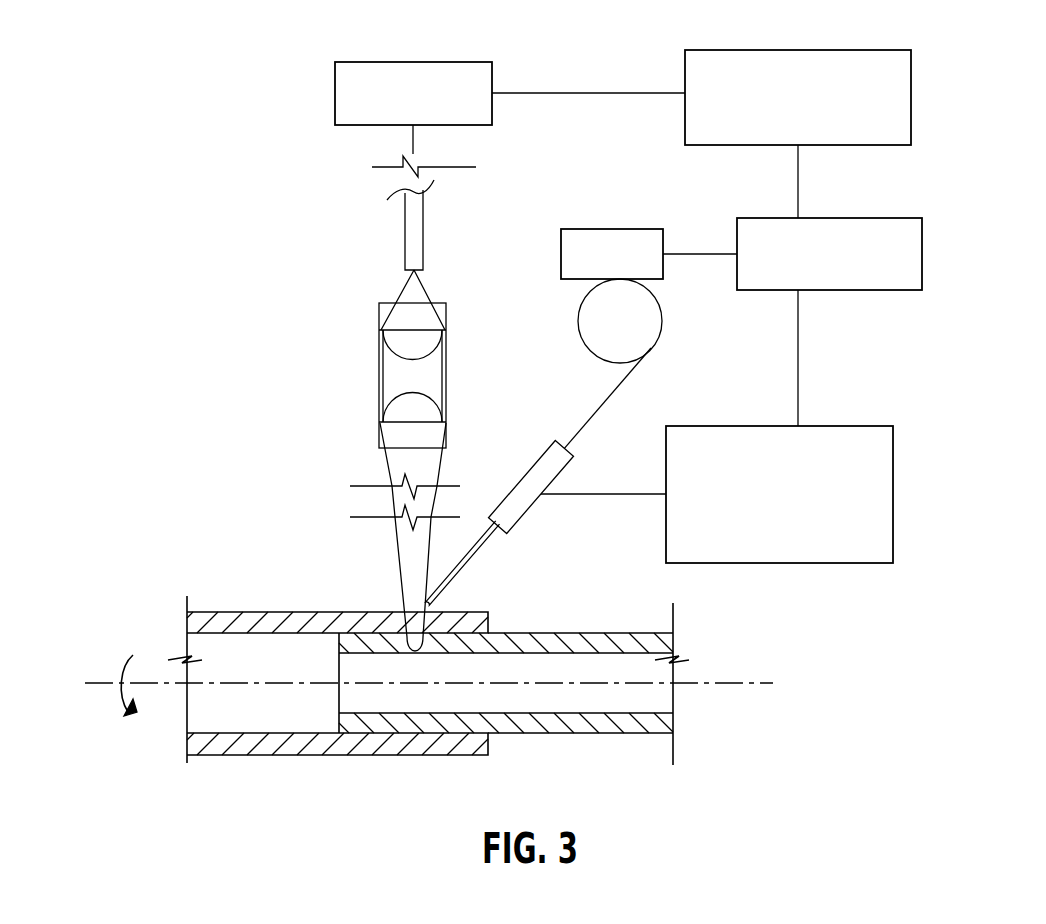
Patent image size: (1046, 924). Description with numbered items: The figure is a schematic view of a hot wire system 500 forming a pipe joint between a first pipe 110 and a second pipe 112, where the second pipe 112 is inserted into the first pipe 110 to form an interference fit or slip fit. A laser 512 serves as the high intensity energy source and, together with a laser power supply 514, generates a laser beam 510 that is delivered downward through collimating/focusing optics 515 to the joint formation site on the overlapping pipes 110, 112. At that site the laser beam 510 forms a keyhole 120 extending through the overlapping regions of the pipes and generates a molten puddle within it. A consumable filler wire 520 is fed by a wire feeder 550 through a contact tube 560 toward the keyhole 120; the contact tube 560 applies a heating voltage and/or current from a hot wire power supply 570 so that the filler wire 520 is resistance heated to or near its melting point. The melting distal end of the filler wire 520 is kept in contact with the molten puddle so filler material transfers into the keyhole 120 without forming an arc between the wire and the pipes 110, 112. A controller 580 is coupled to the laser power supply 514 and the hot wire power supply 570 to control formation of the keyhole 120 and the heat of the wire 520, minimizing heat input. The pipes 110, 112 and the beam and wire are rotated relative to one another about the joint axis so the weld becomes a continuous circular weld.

The hot wire system 500 is at (180, 286).
The laser 512 is at (335, 84).
The laser power supply 514 is at (685, 69).
The controller 580 is at (835, 291).
The hot wire power supply 570 is at (719, 426).
The wire feeder 550 is at (626, 229).
The contact tube 560 is at (535, 462).
The filler wire 520 is at (468, 562).
The collimating/focusing optics 515 is at (379, 380).
The laser beam 510 is at (392, 549).
The keyhole 120 is at (392, 598).
The first pipe 110 is at (242, 611).
The second pipe 112 is at (582, 632).